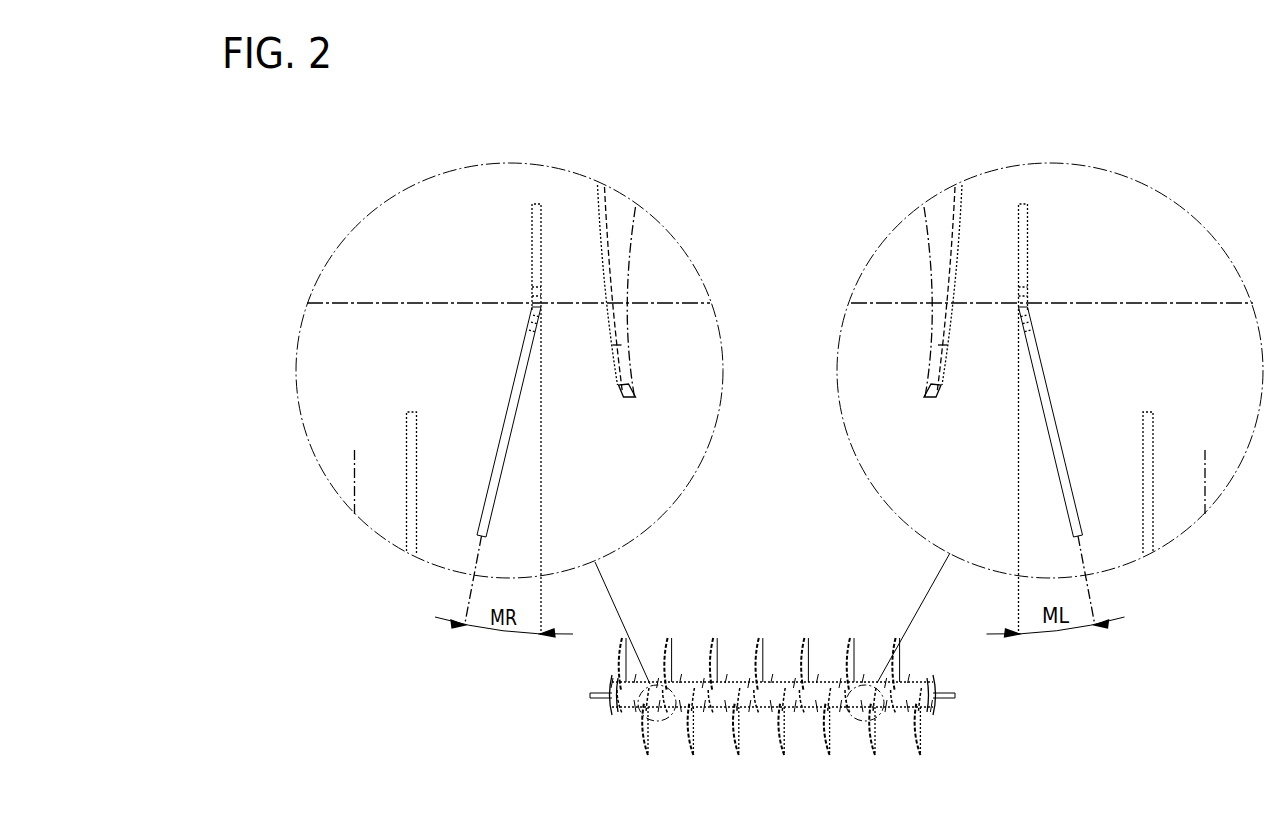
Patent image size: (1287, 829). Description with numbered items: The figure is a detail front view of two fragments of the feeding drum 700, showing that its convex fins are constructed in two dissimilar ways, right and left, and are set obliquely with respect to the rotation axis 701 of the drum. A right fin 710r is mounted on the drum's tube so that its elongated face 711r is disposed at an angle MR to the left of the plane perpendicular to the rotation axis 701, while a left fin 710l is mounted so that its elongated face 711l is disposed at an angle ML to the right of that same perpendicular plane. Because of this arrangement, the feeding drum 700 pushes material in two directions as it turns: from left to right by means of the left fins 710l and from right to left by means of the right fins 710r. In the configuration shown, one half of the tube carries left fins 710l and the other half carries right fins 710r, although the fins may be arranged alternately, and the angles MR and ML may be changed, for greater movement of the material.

The feeding drum 700 is at (759, 632).
The rotation axis 701 is at (421, 303).
The right fin 710r is at (537, 206).
The left fin 710l is at (1023, 206).
The elongated face of right fin 711r is at (502, 437).
The elongated face of left fin 711l is at (1052, 424).